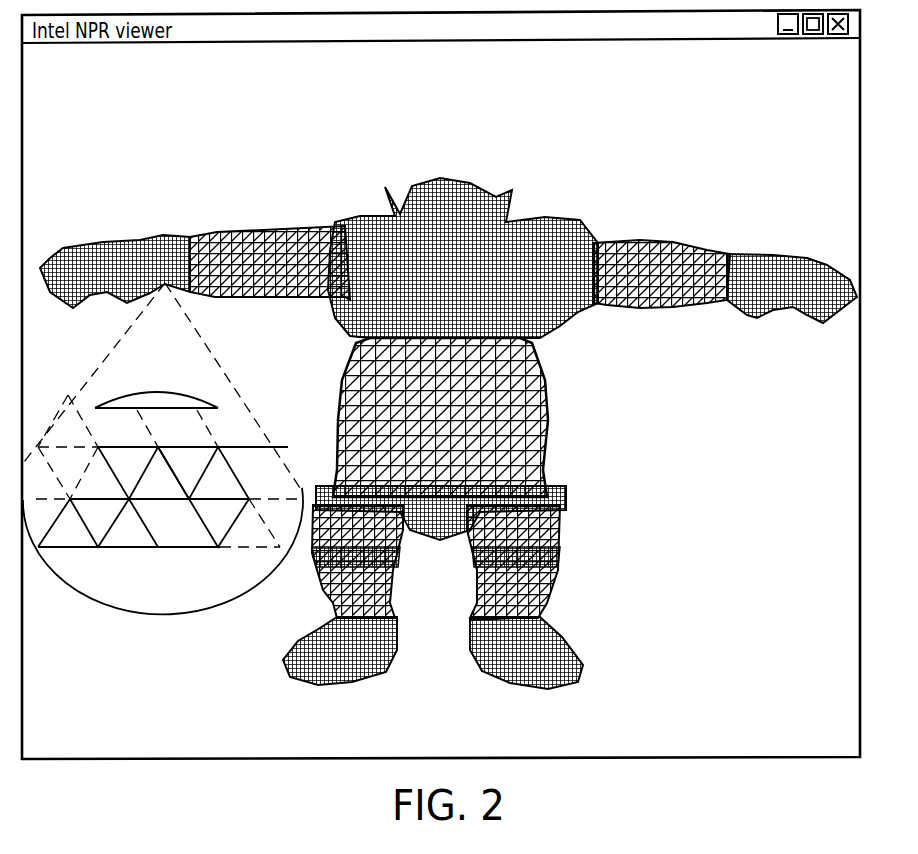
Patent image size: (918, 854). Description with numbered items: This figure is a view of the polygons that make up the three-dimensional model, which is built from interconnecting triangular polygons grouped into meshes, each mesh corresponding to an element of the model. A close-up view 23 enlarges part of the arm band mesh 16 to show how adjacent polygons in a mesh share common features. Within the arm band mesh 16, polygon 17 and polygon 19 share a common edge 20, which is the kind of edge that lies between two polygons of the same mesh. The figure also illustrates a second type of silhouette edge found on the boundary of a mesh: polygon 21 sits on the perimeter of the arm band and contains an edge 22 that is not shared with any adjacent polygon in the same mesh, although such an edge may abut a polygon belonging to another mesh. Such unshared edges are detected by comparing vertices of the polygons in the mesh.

The arm band mesh 16 is at (160, 392).
The polygon 17 is at (108, 458).
The polygon 19 is at (173, 466).
The common edge 20 is at (140, 453).
The polygon 21 is at (140, 522).
The edge 22 is at (114, 549).
The close-up view 23 is at (38, 553).